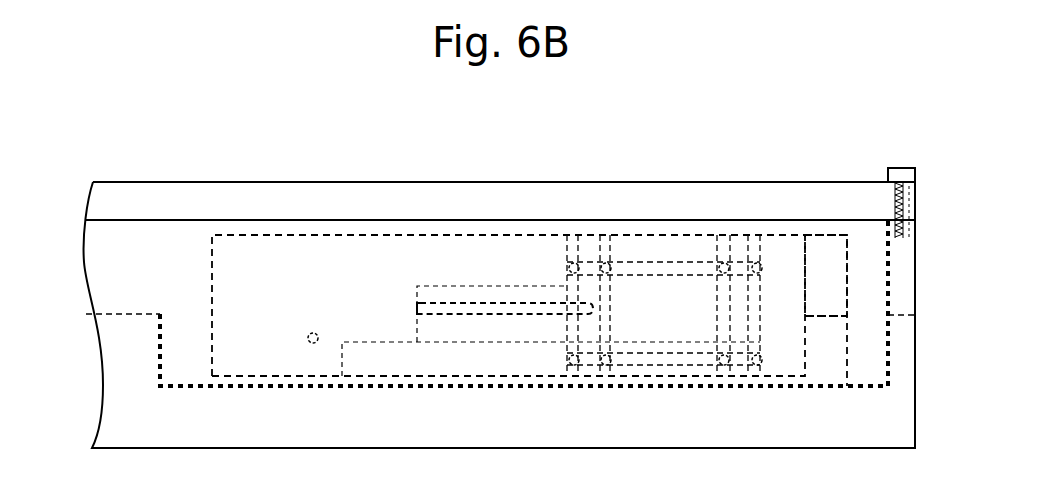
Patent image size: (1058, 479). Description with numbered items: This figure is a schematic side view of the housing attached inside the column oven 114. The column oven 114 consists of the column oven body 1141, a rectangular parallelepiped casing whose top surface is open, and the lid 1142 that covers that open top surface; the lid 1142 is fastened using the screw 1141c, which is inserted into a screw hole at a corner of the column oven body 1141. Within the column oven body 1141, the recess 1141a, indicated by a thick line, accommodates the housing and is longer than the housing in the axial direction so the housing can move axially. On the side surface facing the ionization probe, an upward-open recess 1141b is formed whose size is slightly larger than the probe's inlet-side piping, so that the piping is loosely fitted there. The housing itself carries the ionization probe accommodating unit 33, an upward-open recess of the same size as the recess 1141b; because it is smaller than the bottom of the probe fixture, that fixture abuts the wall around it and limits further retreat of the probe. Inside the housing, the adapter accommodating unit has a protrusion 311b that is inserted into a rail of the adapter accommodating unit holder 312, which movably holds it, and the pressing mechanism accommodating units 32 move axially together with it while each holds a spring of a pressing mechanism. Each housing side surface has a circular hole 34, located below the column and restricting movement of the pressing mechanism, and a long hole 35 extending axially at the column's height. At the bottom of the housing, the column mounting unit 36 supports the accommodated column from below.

The column oven 114 is at (708, 128).
The column oven body 1141 is at (660, 220).
The lid 1142 is at (593, 180).
The recess 1141a is at (863, 270).
The recess 1141b is at (902, 318).
The screw 1141c is at (890, 168).
The ionization probe accommodating unit 33 is at (822, 262).
The pressing mechanism accommodating unit 32 is at (417, 293).
The long hole 35 is at (497, 315).
The column mounting unit 36 is at (368, 342).
The circular hole 34 is at (313, 343).
The protrusion 311b is at (577, 356).
The adapter accommodating unit holder 312 is at (680, 272).